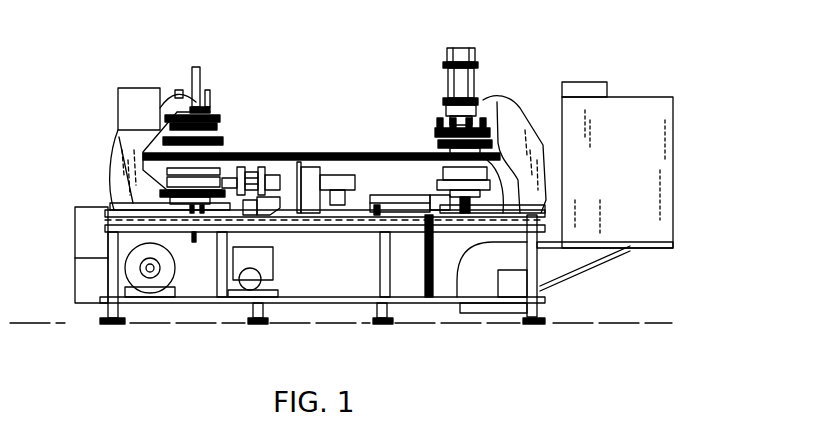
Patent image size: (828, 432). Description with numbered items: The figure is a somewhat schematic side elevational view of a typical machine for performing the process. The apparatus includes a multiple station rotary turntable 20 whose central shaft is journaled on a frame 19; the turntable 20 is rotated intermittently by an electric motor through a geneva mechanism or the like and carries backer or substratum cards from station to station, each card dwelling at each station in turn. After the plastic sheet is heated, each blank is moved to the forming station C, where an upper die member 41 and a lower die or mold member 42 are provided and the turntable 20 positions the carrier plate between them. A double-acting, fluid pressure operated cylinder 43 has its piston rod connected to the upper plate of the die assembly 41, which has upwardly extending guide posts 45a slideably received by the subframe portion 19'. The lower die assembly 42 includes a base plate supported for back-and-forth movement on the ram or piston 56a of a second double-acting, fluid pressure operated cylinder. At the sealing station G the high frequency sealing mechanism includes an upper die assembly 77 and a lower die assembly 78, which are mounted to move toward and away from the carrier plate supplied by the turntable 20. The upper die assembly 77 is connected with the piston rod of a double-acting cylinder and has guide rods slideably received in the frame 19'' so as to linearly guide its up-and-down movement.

The frame 19 is at (341, 216).
The subframe portion 19' is at (147, 150).
The frame 19'' is at (497, 135).
The multiple station rotary turntable 20 is at (287, 153).
The upper die member 41 is at (230, 130).
The lower die or mold member 42 is at (227, 143).
The double-acting fluid pressure operated cylinder 43 is at (195, 66).
The guide posts 45a is at (207, 102).
The ram or piston 56a is at (194, 204).
The upper die assembly 77 is at (437, 125).
The lower die assembly 78 is at (434, 152).
The forming station C is at (171, 86).
The high frequency sealing station G is at (490, 80).